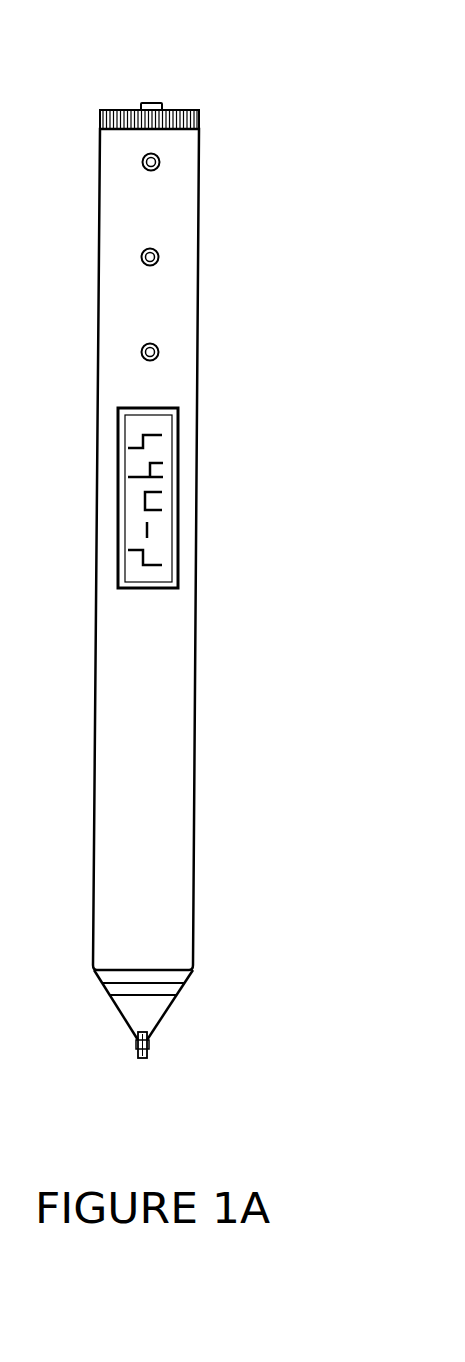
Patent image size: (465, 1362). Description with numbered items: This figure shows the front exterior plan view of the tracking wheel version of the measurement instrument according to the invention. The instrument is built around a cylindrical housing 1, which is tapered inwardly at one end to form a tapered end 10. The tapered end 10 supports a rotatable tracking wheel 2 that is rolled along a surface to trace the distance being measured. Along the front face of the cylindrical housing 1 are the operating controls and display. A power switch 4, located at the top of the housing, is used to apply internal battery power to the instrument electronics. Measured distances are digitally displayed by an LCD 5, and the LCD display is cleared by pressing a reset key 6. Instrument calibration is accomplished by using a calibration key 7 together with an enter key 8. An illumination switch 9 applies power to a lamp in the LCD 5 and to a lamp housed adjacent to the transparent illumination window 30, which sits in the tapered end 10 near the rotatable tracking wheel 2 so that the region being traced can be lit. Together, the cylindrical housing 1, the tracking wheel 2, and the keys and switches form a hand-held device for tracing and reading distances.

The cylindrical housing 1 is at (200, 862).
The rotatable tracking wheel 2 is at (157, 1065).
The power switch 4 is at (253, 63).
The LCD 5 is at (180, 476).
The reset key 6 is at (170, 353).
The calibration key 7 is at (170, 257).
The enter key 8 is at (170, 162).
The illumination switch 9 is at (205, 119).
The tapered end 10 is at (173, 1026).
The transparent illumination window 30 is at (192, 993).